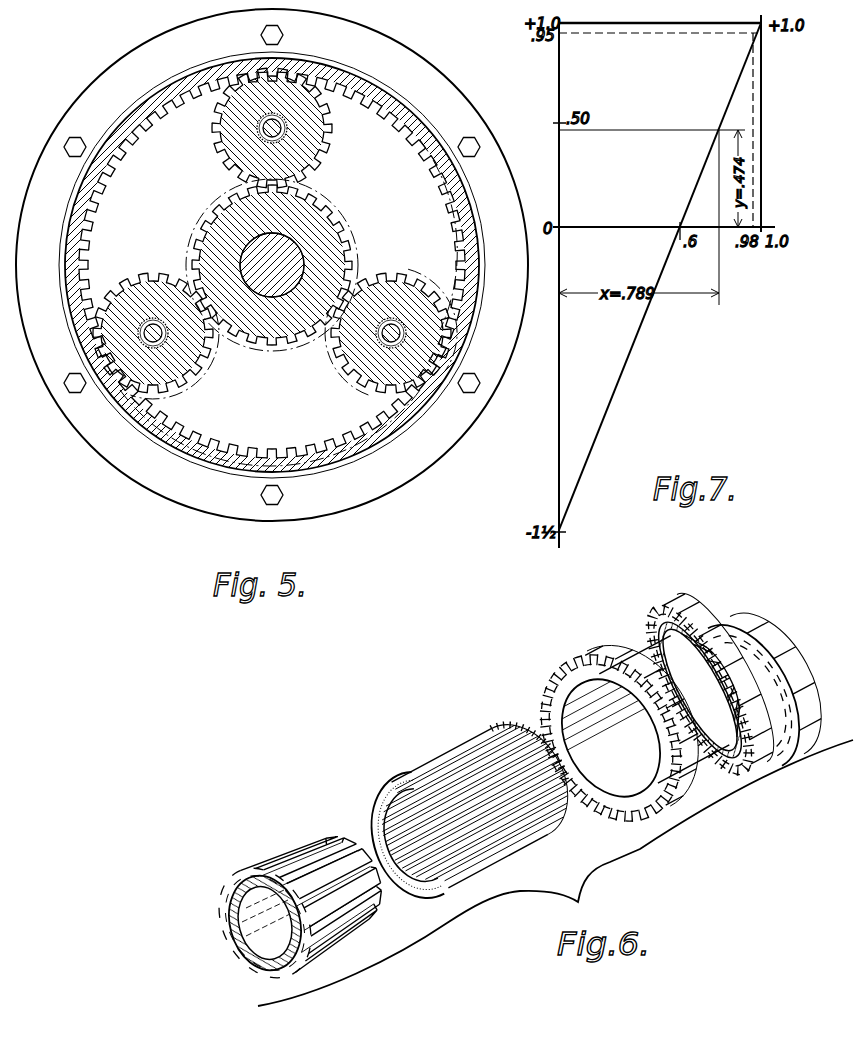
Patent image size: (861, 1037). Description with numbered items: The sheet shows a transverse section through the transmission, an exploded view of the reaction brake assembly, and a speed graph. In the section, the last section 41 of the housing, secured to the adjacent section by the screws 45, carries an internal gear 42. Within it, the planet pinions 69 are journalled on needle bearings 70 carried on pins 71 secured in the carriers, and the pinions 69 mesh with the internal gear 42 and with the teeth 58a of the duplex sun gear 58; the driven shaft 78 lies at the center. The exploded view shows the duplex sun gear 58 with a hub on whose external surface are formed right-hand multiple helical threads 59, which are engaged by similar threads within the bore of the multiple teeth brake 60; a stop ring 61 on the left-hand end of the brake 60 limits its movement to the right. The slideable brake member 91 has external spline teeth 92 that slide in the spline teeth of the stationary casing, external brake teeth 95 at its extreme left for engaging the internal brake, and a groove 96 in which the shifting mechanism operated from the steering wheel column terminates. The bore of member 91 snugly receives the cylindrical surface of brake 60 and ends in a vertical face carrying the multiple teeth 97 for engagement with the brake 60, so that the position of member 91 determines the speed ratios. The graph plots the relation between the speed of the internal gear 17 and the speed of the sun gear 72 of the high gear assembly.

In FIG. 5, the last section 41 is at (398, 102).
In FIG. 5, the internal gear 42 is at (105, 167).
In FIG. 5, the screws 45 is at (284, 31).
In FIG. 5, the duplex sun gear 58 is at (262, 337).
In FIG. 6, the duplex sun gear 58 is at (245, 884).
In FIG. 5, the sun gear teeth 58a is at (320, 198).
In FIG. 6, the right-hand multiple helical threads 59 is at (320, 856).
In FIG. 6, the multiple teeth brake 60 is at (483, 752).
In FIG. 6, the stop ring 61 is at (430, 882).
In FIG. 5, the planet pinions 69 is at (333, 135).
In FIG. 5, the needle bearings 70 is at (267, 138).
In FIG. 5, the pins 71 is at (263, 127).
In FIG. 5, the driven shaft 78 is at (293, 253).
In FIG. 6, the slideable brake member 91 is at (642, 657).
In FIG. 6, the external spline teeth 92 is at (722, 611).
In FIG. 6, the external brake teeth 95 is at (593, 659).
In FIG. 6, the groove 96 is at (747, 647).
In FIG. 6, the multiple teeth 97 is at (717, 710).
In FIG. 7, the sun gear 72 is at (547, 283).
In FIG. 7, the internal gear 17 is at (775, 123).